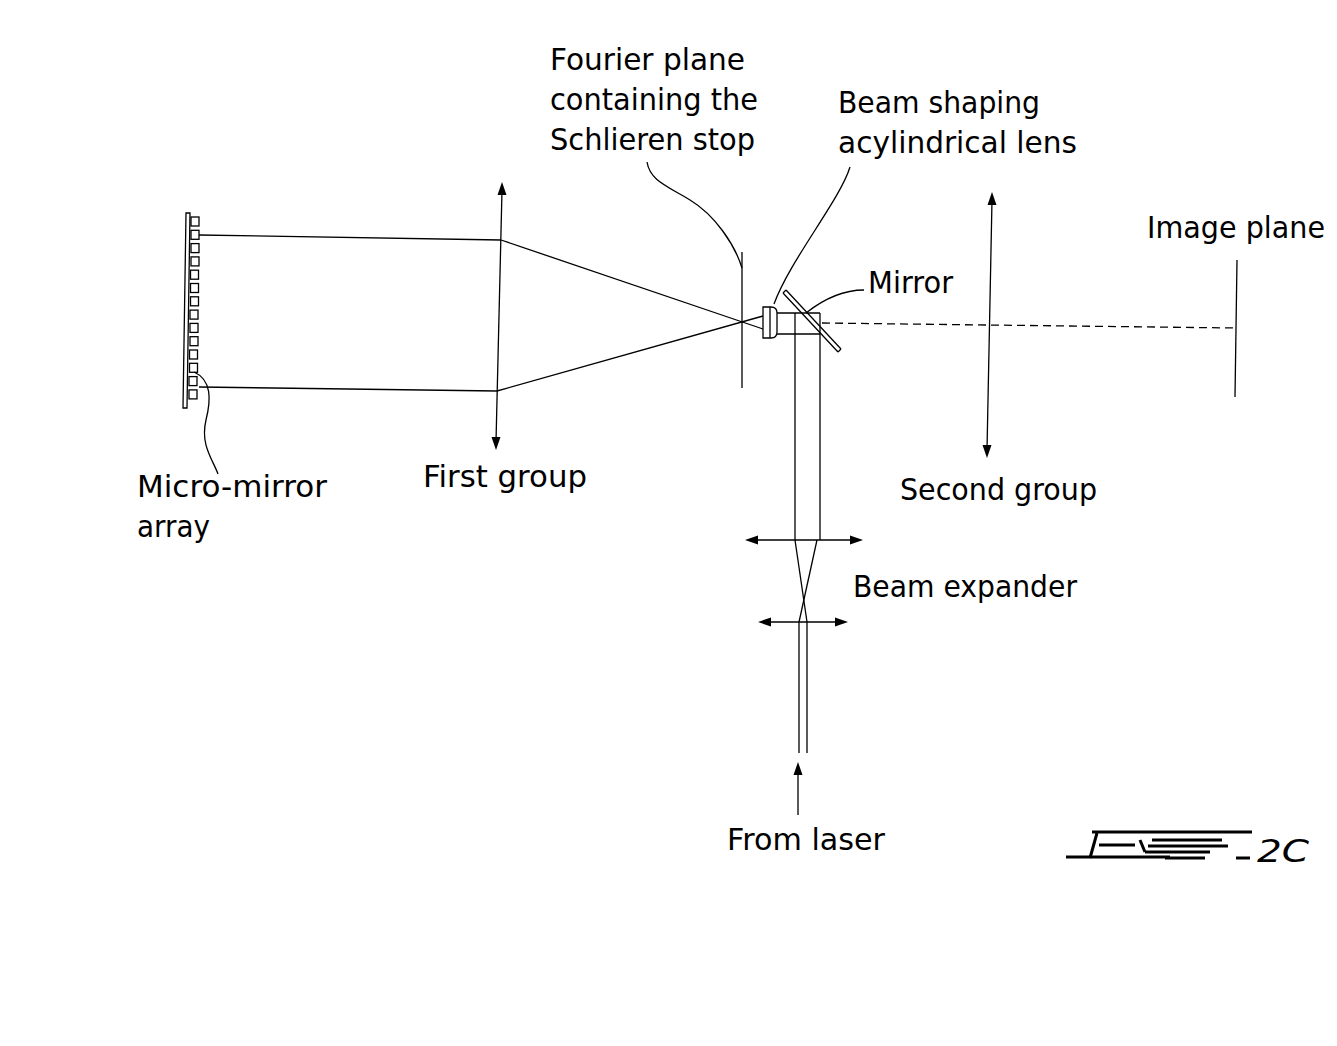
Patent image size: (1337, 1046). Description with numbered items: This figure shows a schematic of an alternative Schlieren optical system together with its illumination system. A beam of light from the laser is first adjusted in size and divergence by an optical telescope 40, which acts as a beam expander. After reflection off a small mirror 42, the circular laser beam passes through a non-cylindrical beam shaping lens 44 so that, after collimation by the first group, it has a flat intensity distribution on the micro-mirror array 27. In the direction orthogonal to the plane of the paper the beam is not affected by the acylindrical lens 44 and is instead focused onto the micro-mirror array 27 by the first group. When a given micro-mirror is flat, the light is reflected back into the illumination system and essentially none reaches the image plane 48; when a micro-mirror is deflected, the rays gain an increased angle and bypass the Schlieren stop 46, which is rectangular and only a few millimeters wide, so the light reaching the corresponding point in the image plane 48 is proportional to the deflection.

The micro-mirror array 27 is at (182, 308).
The optical telescope 40 is at (788, 452).
The small mirror 42 is at (800, 285).
The acylindrical beam shaping lens 44 is at (762, 300).
The Schlieren stop 46 is at (735, 294).
The image plane 48 is at (1250, 372).